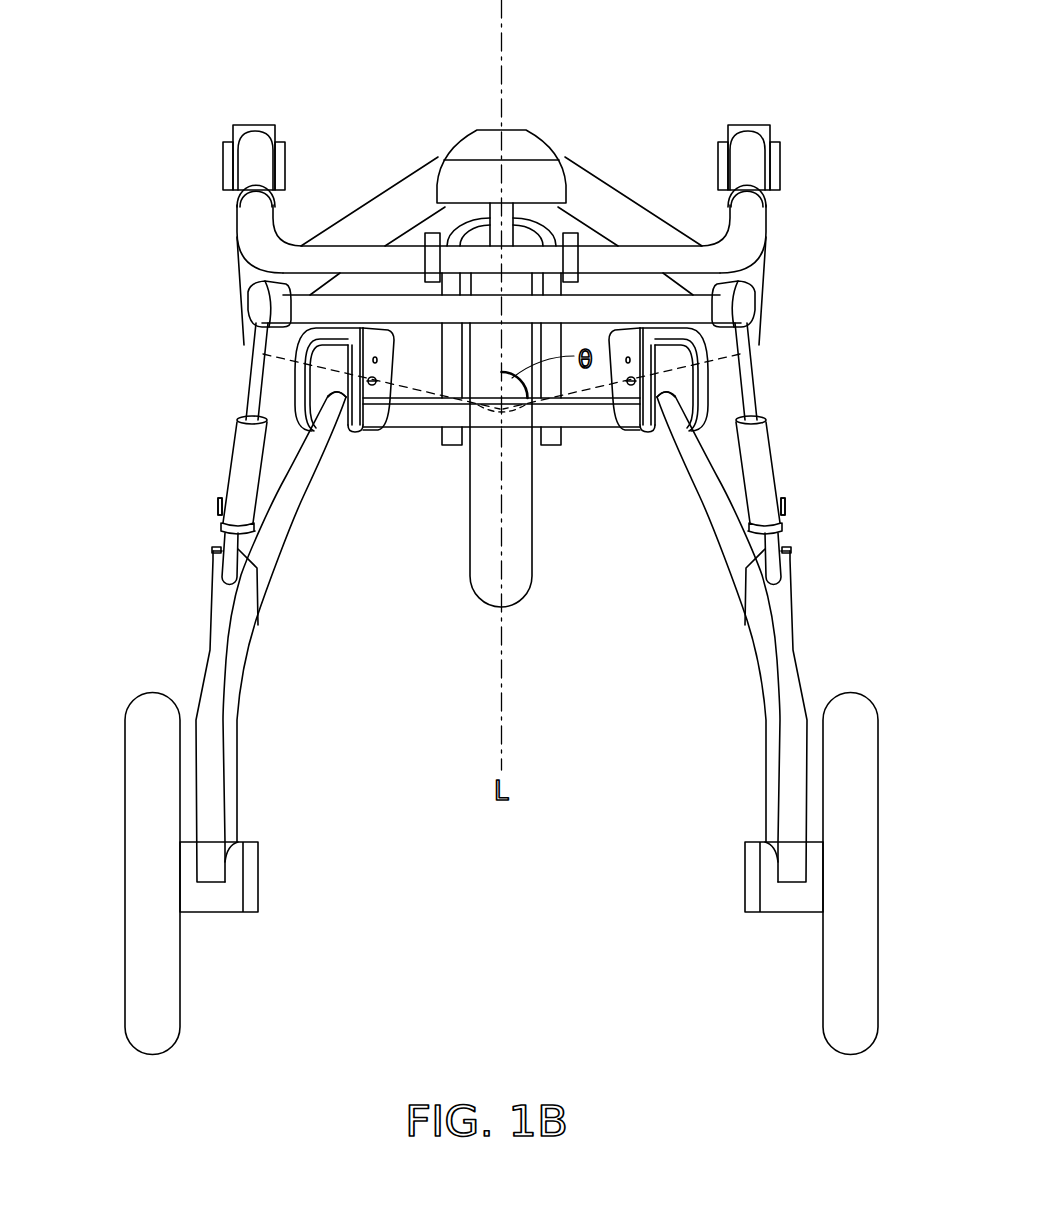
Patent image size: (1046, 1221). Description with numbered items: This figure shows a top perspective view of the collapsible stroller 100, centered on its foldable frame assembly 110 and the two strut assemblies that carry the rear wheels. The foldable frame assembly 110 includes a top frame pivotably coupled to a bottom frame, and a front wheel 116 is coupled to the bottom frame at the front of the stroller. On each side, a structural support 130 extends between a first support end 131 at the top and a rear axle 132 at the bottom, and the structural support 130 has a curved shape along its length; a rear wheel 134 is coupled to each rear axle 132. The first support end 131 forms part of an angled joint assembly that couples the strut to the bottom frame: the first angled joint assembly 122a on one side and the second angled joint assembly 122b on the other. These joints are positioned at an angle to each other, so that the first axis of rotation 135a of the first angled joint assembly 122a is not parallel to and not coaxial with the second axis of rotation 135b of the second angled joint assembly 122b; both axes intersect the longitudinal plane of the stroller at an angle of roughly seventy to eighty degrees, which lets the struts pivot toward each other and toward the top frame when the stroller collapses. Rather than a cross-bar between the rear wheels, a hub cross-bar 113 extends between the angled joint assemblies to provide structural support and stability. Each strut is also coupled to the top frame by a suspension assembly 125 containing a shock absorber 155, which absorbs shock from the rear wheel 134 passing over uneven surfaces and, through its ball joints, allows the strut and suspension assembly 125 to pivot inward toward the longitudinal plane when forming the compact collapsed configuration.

The collapsible stroller 100 is at (742, 58).
The foldable frame assembly 110 is at (176, 194).
The hub cross-bar 113 is at (430, 425).
The front wheel 116 is at (517, 550).
The first angled joint assembly 122a is at (282, 384).
The second angled joint assembly 122b is at (720, 377).
The suspension assembly 125 is at (802, 420).
The structural support 130 is at (243, 663).
The first support end 131 is at (325, 398).
The rear axle 132 is at (258, 862).
The rear wheel 134 is at (135, 858).
The first axis of rotation 135a is at (393, 410).
The second axis of rotation 135b is at (610, 410).
The shock absorber 155 is at (238, 470).